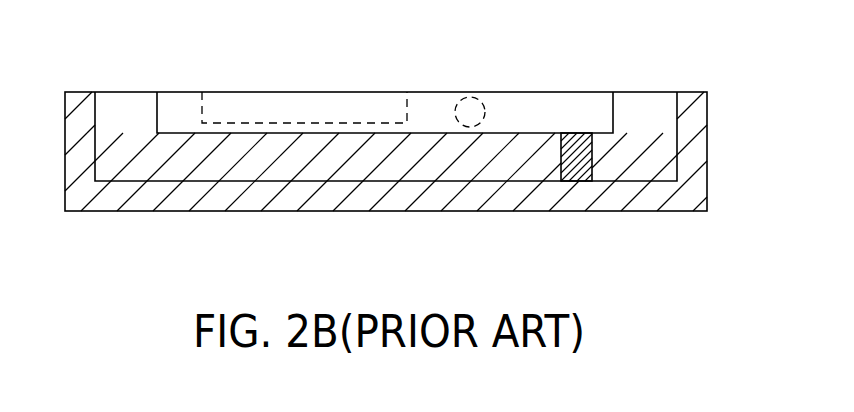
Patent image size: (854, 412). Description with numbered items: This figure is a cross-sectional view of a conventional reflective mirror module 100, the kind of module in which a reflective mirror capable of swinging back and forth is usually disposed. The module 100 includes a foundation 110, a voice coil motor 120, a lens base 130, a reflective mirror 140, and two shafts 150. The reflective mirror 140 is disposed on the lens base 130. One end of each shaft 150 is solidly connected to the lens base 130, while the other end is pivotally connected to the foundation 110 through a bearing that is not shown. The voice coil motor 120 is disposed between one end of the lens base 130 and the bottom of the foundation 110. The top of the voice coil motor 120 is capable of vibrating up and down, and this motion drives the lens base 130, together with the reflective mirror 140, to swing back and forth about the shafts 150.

The reflective mirror module 100 is at (413, 168).
The foundation 110 is at (697, 185).
The voice coil motor 120 is at (583, 162).
The lens base 130 is at (577, 92).
The reflective mirror 140 is at (387, 91).
The shafts 150 is at (472, 96).